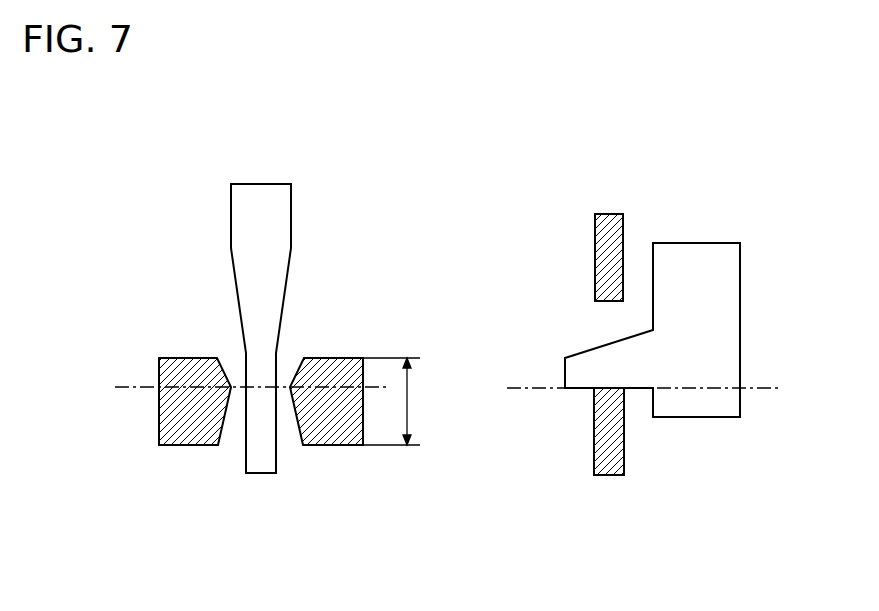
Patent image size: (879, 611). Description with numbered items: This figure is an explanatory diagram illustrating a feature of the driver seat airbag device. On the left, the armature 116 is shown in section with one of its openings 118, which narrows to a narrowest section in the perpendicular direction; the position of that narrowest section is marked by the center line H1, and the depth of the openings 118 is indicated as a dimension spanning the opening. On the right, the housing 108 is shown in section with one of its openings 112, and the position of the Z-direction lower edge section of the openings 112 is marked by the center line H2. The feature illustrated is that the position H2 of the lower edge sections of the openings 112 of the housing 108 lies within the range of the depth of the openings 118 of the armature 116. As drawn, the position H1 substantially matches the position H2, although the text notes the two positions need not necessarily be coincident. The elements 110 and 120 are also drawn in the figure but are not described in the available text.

The housing 108 is at (610, 476).
The blade 110 is at (276, 460).
The openings 112 is at (607, 330).
The armature 116 is at (175, 446).
The openings 118 is at (290, 371).
The inclined surface member 120 is at (565, 376).
The position of a narrowest section of the openings H1 is at (235, 386).
The position of the Z-direction lower edge sections of the openings H2 is at (661, 388).